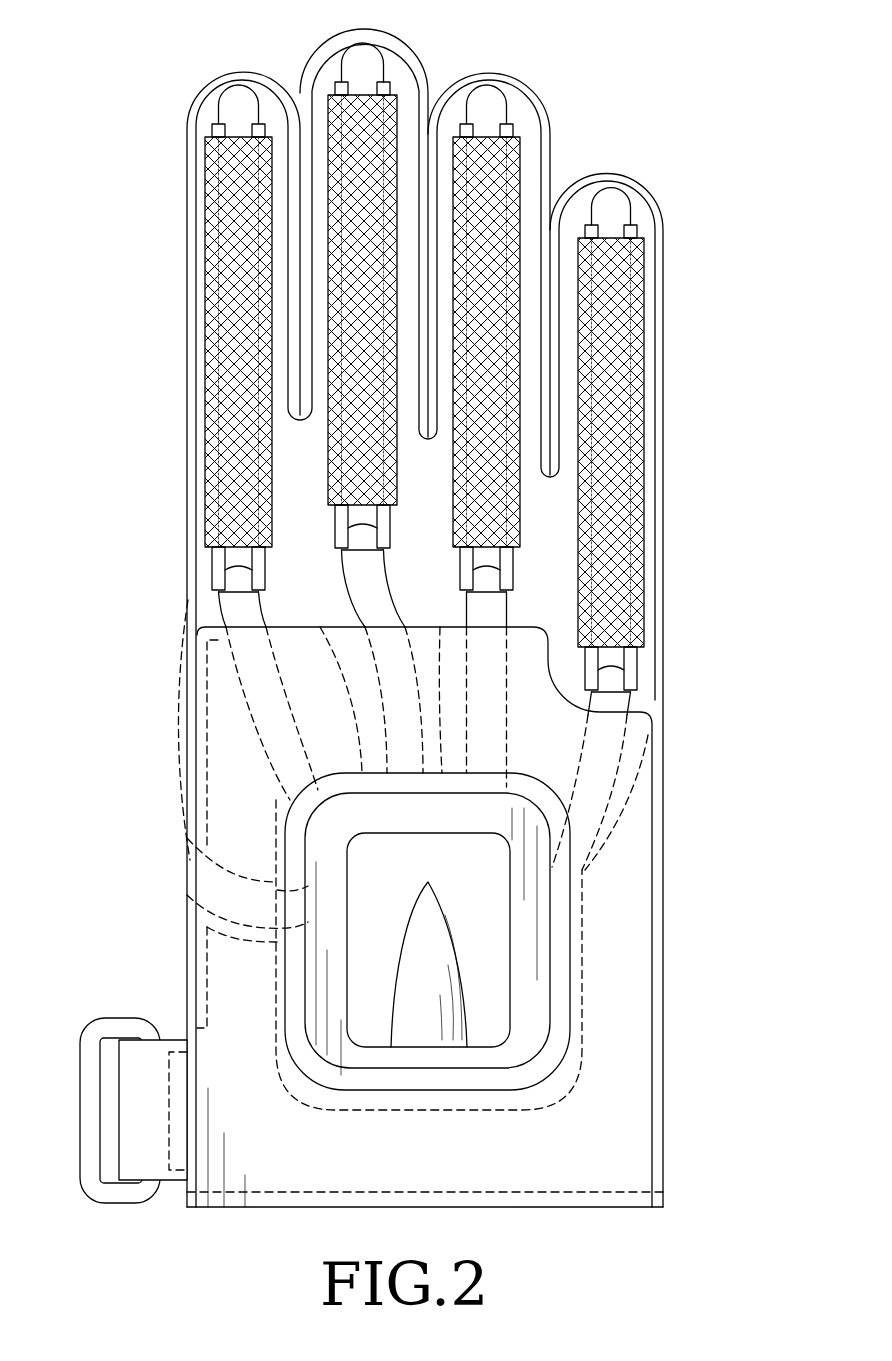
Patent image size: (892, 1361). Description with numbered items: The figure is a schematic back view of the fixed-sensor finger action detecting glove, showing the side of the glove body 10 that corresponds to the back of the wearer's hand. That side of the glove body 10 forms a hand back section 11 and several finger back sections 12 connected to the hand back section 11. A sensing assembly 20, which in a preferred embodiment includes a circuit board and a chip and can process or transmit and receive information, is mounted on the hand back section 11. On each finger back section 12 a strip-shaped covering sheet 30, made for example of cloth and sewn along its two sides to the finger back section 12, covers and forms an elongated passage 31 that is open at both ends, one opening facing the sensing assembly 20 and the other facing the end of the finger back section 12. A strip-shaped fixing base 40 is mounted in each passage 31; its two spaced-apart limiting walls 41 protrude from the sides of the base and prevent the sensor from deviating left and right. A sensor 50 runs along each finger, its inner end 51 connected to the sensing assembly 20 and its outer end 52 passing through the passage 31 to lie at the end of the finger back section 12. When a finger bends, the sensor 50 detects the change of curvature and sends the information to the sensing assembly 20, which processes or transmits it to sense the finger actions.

The glove body 10 is at (438, 606).
The hand back section 11 is at (602, 997).
The finger back section 12 is at (190, 465).
The sensing assembly 20 is at (527, 922).
The covering sheet 30 is at (209, 442).
The passage 31 is at (235, 257).
The fixing base 40 is at (368, 389).
The limiting wall 41 is at (341, 82).
The sensor 50 is at (600, 416).
The inner end 51 is at (490, 580).
The outer end 52 is at (495, 98).